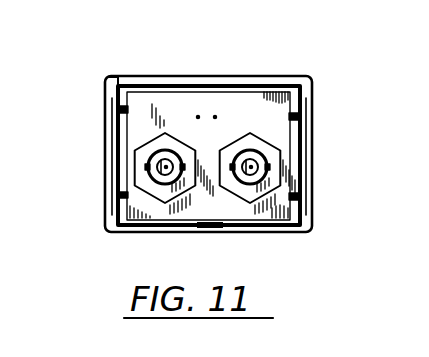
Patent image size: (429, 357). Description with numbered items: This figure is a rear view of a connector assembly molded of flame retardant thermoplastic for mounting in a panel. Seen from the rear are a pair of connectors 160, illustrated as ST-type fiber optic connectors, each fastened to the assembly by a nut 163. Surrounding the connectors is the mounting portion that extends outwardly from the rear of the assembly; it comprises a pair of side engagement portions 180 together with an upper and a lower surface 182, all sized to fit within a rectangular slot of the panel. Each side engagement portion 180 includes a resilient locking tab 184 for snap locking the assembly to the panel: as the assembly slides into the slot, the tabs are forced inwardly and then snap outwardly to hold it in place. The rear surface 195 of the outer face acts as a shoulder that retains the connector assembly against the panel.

The connector 160 is at (247, 175).
The nut 163 is at (148, 144).
The side engagement portion 180 is at (118, 106).
The upper and lower surface 182 is at (200, 84).
The resilient locking tab 184 is at (108, 162).
The rear surface 195 is at (120, 77).